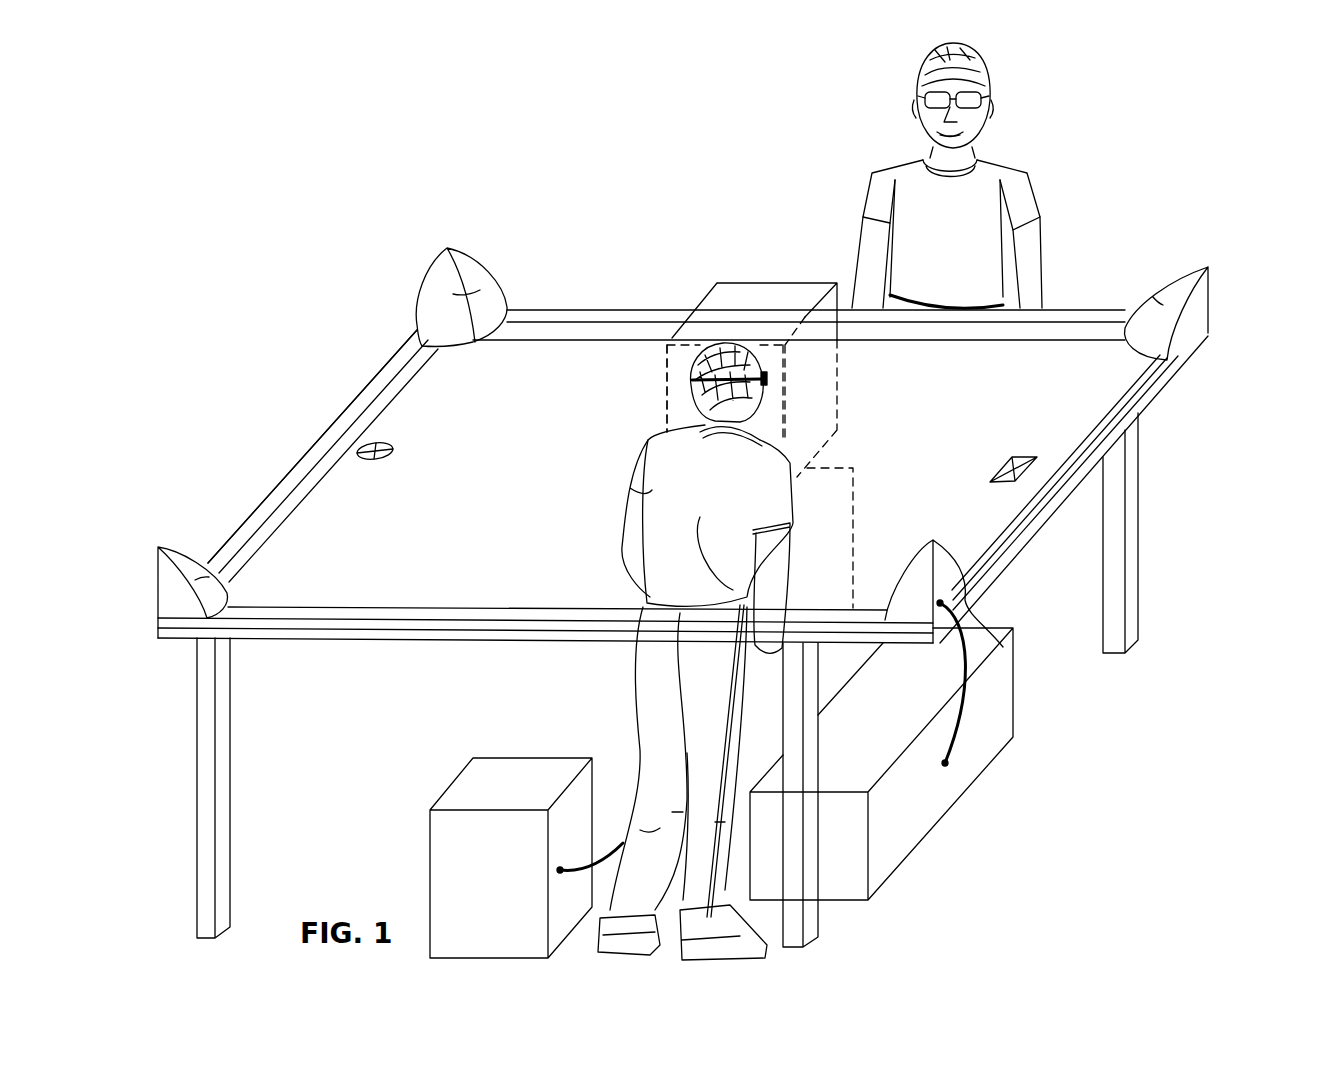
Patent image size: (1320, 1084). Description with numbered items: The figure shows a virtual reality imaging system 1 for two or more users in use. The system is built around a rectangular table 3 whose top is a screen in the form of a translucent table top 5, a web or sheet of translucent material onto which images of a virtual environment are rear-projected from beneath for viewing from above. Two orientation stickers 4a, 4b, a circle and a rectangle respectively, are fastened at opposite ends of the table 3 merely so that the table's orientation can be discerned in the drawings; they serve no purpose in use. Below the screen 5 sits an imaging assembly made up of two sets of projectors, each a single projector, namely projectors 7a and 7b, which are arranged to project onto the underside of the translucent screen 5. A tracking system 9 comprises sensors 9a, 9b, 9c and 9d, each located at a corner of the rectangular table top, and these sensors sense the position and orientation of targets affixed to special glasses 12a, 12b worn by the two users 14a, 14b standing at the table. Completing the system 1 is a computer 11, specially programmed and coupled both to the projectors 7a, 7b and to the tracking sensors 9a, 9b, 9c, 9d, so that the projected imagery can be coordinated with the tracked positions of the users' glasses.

The virtual reality imaging system 1 is at (1174, 192).
The rectangular table 3 is at (300, 397).
The orientation sticker 4a is at (388, 446).
The orientation sticker 4b is at (1022, 455).
The translucent table top 5 is at (607, 363).
The projector 7a is at (717, 292).
The projector 7b is at (518, 895).
The tracking system 9 is at (1201, 308).
The sensor 9a is at (477, 268).
The sensor 9b is at (1177, 285).
The sensor 9c is at (968, 603).
The sensor 9d is at (167, 592).
The computer 11 is at (928, 812).
The special glasses 12a is at (930, 117).
The special glasses 12b is at (778, 380).
The user 14a is at (1007, 74).
The user 14b is at (640, 497).